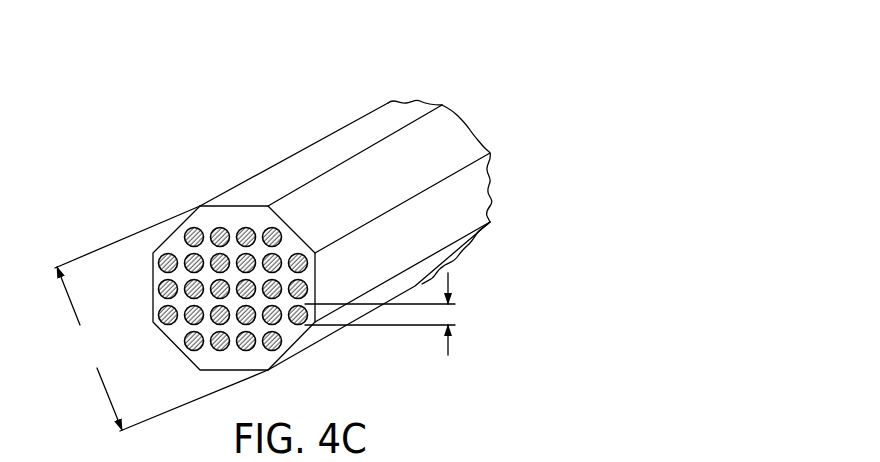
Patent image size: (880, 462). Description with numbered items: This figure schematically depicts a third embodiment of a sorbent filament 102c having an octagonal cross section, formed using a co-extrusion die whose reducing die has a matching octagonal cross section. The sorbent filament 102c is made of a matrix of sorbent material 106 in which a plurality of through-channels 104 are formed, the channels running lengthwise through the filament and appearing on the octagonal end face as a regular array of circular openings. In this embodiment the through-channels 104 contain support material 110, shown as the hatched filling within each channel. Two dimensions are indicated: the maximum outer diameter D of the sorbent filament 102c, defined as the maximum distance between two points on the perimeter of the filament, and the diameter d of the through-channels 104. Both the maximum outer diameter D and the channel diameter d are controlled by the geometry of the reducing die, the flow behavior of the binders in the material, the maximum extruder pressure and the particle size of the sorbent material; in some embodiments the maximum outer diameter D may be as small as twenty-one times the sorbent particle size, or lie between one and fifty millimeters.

The sorbent filament 102c is at (153, 208).
The matrix of sorbent material 106 is at (209, 211).
The support material 110 is at (279, 233).
The through-channels 104 is at (308, 290).
The maximum outer diameter D is at (161, 318).
The diameter of the through-channels d is at (453, 313).